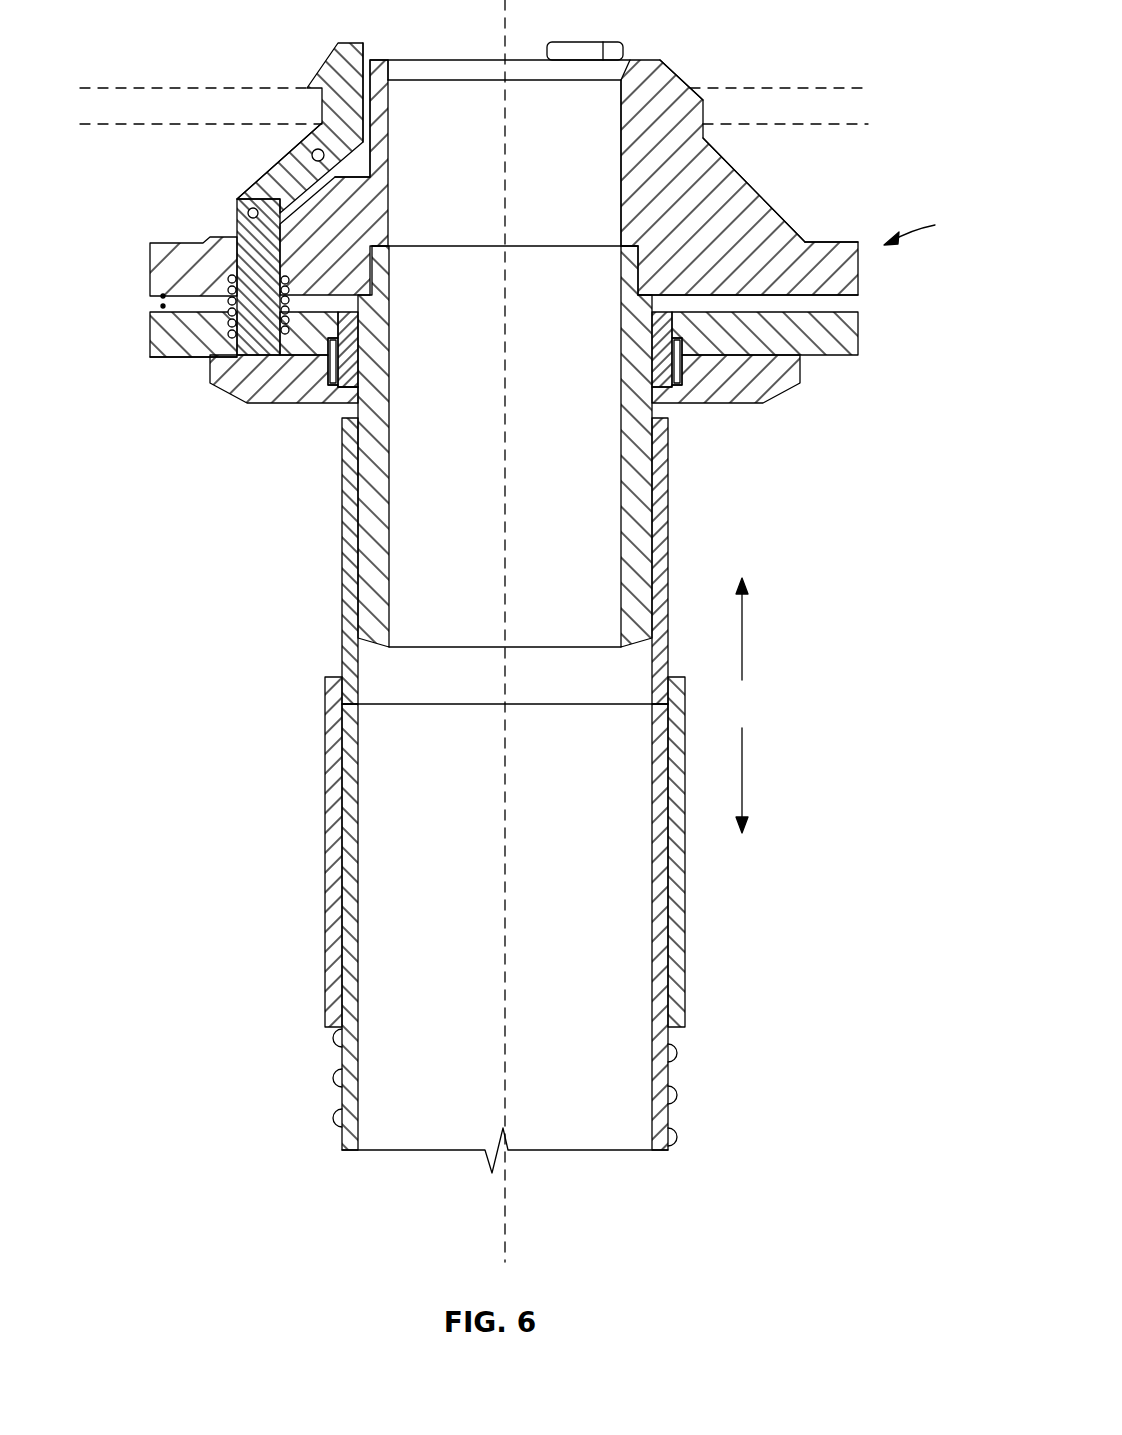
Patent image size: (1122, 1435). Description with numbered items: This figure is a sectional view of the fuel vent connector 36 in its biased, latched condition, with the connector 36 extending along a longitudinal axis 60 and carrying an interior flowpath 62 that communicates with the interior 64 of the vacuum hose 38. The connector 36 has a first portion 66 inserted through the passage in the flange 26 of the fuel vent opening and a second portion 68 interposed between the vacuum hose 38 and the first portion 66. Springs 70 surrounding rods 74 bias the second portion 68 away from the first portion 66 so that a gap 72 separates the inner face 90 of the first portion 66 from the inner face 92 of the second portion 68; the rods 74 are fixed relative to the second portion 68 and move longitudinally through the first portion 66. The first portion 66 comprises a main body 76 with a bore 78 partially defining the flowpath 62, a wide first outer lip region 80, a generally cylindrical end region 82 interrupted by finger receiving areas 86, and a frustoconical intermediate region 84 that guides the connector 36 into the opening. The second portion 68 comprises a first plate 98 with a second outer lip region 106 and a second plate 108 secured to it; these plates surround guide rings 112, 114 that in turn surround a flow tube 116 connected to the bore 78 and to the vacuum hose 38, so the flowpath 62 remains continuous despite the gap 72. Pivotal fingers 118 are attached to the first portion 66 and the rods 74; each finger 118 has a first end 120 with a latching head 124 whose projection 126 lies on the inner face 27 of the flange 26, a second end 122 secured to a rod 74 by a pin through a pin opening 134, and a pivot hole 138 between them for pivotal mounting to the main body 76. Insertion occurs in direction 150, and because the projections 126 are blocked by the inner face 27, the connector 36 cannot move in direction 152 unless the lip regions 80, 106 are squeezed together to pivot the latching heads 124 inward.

The flange 26 is at (100, 88).
The inner face 27 is at (135, 88).
The fuel vent connector 36 is at (924, 225).
The vacuum hose 38 is at (335, 1060).
The longitudinal axis 60 is at (505, 1207).
The interior flowpath 62 is at (590, 467).
The interior of the vacuum hose 64 is at (633, 1097).
The first portion 66 is at (830, 242).
The second portion 68 is at (820, 352).
The springs 70 is at (175, 335).
The gap 72 is at (855, 300).
The rods 74 is at (225, 385).
The main body 76 is at (770, 190).
The bore 78 is at (620, 160).
The first outer lip region 80 is at (150, 268).
The end region 82 is at (665, 90).
The intermediate region 84 is at (770, 212).
The finger receiving areas 86 is at (370, 173).
The inner face 90 is at (163, 296).
The inner face 92 is at (163, 306).
The first plate 98 is at (855, 330).
The second outer lip region 106 is at (158, 358).
The second plate 108 is at (740, 393).
The guide ring 112 is at (330, 375).
The guide ring 114 is at (350, 402).
The flow tube 116 is at (360, 583).
The pivotal fingers 118 is at (283, 168).
The first end 120 is at (355, 45).
The second end 122 is at (237, 203).
The latching head 124 is at (580, 42).
The projection 126 is at (385, 102).
The pin opening 134 is at (248, 210).
The pivot hole 138 is at (313, 151).
The direction 150 is at (742, 625).
The direction 152 is at (742, 735).